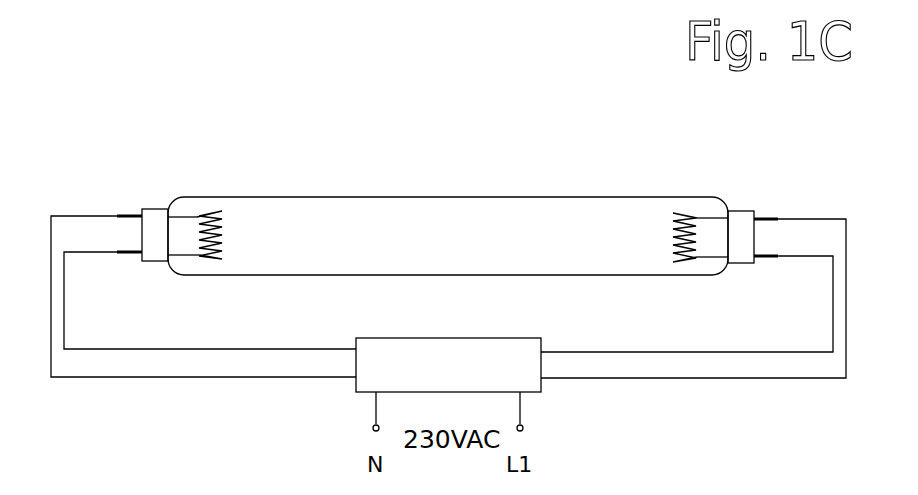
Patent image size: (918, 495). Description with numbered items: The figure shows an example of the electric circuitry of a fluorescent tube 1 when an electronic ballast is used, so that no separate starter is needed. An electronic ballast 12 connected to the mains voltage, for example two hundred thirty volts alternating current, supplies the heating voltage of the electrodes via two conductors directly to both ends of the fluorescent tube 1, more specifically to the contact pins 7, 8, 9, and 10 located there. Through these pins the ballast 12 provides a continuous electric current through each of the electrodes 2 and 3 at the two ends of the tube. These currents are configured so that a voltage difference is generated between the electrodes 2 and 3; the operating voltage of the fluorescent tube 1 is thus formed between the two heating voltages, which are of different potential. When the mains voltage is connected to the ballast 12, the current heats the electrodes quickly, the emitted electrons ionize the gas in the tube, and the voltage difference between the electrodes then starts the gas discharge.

The fluorescent tube 1 is at (558, 287).
The electrode 2 is at (194, 258).
The electrode 3 is at (703, 262).
The contact pin 7 is at (127, 216).
The contact pin 8 is at (127, 253).
The contact pin 9 is at (777, 218).
The contact pin 10 is at (777, 258).
The electronic ballast 12 is at (448, 338).